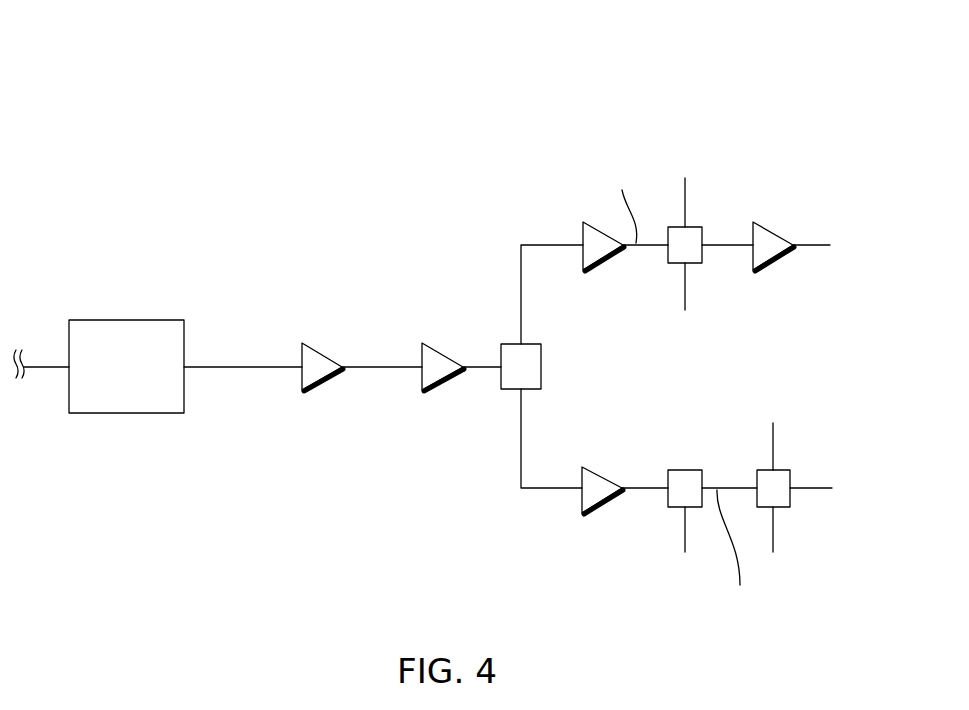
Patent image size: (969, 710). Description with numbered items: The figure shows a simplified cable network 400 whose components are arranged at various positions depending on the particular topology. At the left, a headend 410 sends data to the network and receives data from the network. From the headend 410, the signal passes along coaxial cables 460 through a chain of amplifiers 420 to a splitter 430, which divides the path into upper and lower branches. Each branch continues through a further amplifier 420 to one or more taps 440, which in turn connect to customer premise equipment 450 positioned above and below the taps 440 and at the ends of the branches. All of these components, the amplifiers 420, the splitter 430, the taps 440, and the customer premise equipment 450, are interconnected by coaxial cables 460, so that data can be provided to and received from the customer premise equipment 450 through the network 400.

The cable network 400 is at (146, 57).
The headend 410 is at (124, 320).
The amplifiers 420 is at (300, 356).
The splitters 430 is at (541, 380).
The taps 440 is at (700, 228).
The customer premise equipment 450 is at (686, 150).
The coaxial cables 460 is at (375, 365).